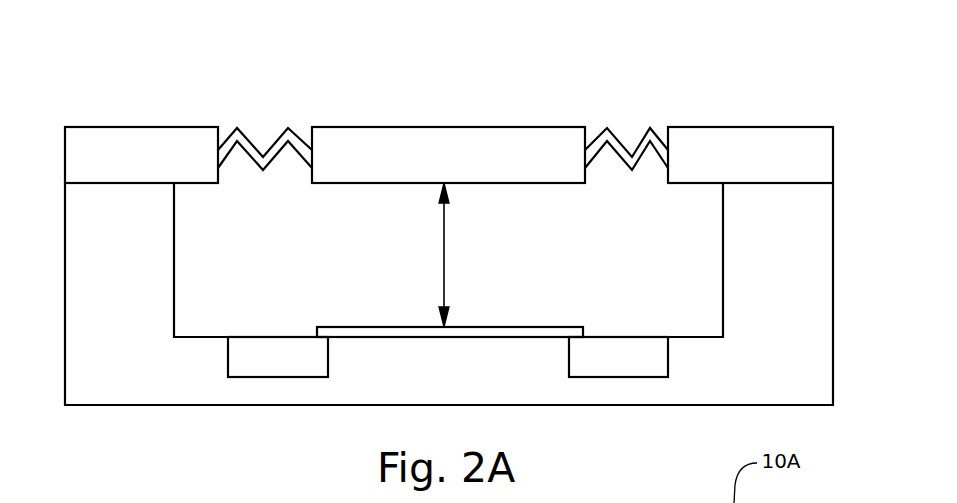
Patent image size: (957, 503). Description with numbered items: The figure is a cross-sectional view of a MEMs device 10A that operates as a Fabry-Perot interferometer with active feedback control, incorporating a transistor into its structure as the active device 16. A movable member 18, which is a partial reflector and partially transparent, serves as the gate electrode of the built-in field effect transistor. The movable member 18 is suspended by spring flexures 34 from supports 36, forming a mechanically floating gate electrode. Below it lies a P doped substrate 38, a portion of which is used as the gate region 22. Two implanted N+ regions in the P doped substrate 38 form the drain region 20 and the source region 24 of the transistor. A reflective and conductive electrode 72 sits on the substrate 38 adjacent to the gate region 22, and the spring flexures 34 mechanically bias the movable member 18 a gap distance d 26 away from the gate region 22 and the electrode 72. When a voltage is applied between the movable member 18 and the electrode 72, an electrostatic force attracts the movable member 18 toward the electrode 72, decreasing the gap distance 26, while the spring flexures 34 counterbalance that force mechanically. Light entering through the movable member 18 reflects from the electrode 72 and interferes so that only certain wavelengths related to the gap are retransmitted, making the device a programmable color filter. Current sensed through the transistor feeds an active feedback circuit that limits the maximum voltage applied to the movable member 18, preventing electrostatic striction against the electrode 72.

The MEMs device 10A is at (487, 214).
The active device 16 is at (362, 302).
The movable member 18 is at (407, 127).
The drain region 20 is at (269, 337).
The gate region 22 is at (448, 358).
The source region 24 is at (621, 337).
The gap distance d 26 is at (472, 253).
The spring flexures 34 is at (237, 128).
The supports 36 is at (833, 154).
The P doped substrate 38 is at (833, 226).
The electrode 72 is at (496, 327).